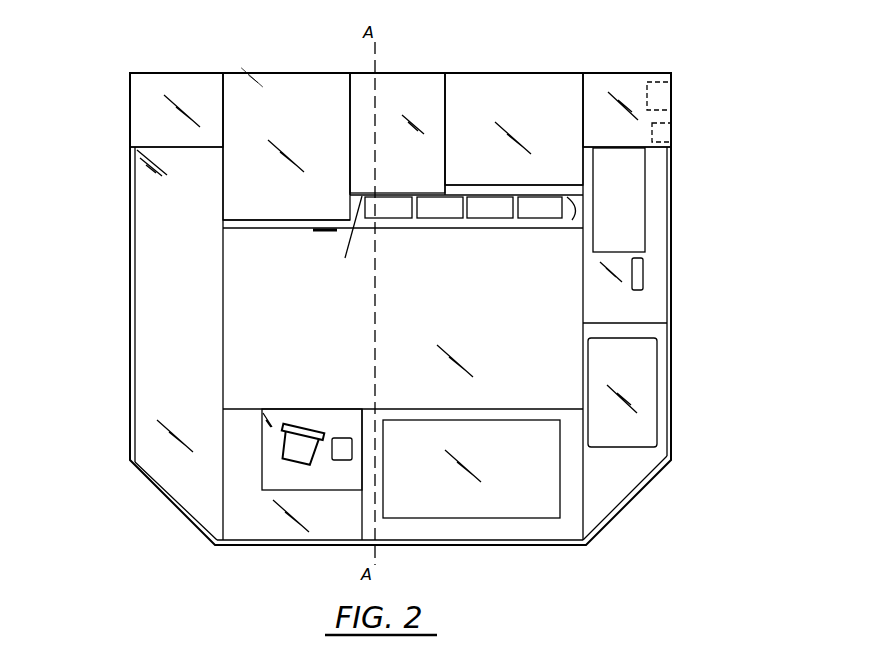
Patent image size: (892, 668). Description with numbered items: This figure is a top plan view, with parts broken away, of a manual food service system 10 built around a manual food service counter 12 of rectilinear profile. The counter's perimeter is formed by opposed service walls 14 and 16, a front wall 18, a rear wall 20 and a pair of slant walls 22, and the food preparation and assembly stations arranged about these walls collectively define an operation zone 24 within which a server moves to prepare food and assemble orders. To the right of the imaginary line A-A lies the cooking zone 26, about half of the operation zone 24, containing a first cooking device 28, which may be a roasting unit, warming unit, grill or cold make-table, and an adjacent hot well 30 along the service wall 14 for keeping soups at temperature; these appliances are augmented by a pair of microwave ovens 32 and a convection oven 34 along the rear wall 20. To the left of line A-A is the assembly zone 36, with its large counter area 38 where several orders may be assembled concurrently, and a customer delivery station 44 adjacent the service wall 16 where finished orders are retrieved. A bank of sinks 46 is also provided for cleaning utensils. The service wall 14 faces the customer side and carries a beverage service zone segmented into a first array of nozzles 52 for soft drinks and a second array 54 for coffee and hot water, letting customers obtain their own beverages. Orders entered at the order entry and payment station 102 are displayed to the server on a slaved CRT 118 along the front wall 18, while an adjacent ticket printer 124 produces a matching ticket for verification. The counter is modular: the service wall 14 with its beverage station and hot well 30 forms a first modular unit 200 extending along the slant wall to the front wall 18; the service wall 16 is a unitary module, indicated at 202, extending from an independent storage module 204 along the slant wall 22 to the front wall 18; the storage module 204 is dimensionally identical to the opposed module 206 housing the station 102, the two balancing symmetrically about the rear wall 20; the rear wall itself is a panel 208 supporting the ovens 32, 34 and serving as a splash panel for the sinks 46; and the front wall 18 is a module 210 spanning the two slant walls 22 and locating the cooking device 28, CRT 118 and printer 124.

The manual food service system 10 is at (728, 99).
The manual food service counter 12 is at (655, 308).
The service wall 14 is at (673, 237).
The service wall 16 is at (130, 320).
The front wall 18 is at (502, 547).
The rear wall 20 is at (415, 64).
The slant walls 22 is at (176, 498).
The operation zone 24 is at (432, 323).
The cooking zone 26 is at (375, 92).
The cooking device 28 is at (525, 463).
The hot well 30 is at (633, 372).
The microwave ovens 32 is at (342, 239).
The convection oven 34 is at (533, 213).
The assembly zone 36 is at (375, 125).
The counter area 38 is at (192, 322).
The customer delivery station 44 is at (103, 263).
The bank of sinks 46 is at (400, 213).
The first array of nozzles 52 is at (631, 275).
The second array 54 is at (640, 188).
The order entry and payment station 102 is at (678, 78).
The slaved CRT 118 is at (295, 427).
The ticket printer 124 is at (341, 437).
The first modular unit 200 is at (680, 365).
The left wall exterior 202 is at (122, 385).
The storage module 204 is at (176, 105).
The opposed module 206 is at (605, 100).
The panel 208 is at (503, 82).
The front wall module 210 is at (302, 548).